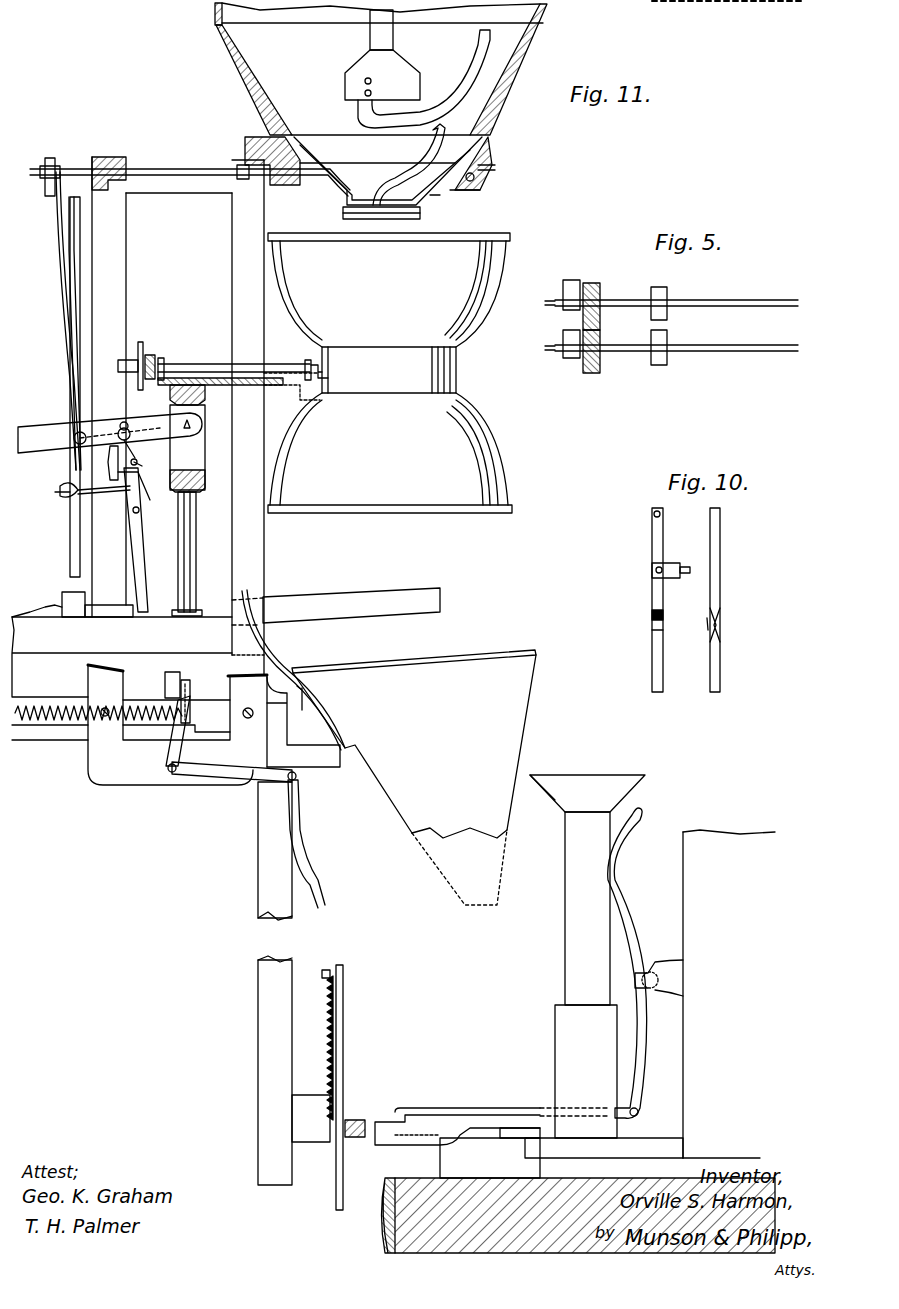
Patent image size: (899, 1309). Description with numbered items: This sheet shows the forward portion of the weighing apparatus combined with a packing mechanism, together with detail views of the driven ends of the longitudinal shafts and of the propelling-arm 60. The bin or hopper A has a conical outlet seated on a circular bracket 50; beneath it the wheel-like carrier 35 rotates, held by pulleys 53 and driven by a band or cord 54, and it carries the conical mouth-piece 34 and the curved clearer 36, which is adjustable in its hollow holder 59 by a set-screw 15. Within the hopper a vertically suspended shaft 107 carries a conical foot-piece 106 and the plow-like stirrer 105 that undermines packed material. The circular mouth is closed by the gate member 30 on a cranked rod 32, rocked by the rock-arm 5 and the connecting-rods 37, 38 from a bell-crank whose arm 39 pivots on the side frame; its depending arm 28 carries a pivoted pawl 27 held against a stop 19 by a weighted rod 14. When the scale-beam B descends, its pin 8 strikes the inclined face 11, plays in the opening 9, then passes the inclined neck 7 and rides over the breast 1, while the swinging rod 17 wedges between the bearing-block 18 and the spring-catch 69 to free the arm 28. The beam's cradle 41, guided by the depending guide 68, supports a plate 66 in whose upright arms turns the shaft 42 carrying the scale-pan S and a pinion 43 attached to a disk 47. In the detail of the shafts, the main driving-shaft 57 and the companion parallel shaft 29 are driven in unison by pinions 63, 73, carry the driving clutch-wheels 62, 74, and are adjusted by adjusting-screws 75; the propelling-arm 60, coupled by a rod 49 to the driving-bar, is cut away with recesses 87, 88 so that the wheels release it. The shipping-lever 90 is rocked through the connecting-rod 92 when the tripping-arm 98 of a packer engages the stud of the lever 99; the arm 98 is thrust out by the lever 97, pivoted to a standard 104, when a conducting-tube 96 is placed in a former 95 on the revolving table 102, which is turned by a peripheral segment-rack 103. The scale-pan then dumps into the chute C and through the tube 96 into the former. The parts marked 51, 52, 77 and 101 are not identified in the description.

In FIG. 11, the bin or hopper A is at (258, 88).
In FIG. 11, the shaft 107 is at (384, 30).
In FIG. 11, the conical foot-piece 106 is at (382, 75).
In FIG. 11, the stirrer 105 is at (424, 79).
In FIG. 11, the circular bracket 50 is at (258, 145).
In FIG. 11, the clearer 36 is at (433, 157).
In FIG. 11, the set-screw 15 is at (402, 165).
In FIG. 11, the hollow holder 59 is at (393, 187).
In FIG. 11, the pulleys 53 is at (505, 163).
In FIG. 11, the driving band or cord 54 is at (476, 180).
In FIG. 11, the wheel-like carrier 35 is at (468, 192).
In FIG. 11, the conical mouth-piece 34 is at (432, 198).
In FIG. 11, the gate member 30 is at (420, 217).
In FIG. 11, the rod 32 is at (190, 172).
In FIG. 11, the rock-arm 5 is at (48, 196).
In FIG. 11, the connecting-rod 37 is at (64, 285).
In FIG. 11, the connecting-rod 38 is at (82, 285).
In FIG. 11, the swinging rod 17 is at (68, 553).
In FIG. 11, the disk 47 is at (141, 340).
In FIG. 11, the pinion 43 is at (155, 356).
In FIG. 11, the shaft 42 is at (206, 362).
In FIG. 11, the plate 66 is at (216, 388).
In FIG. 11, the scale-beam B is at (110, 433).
In FIG. 11, the arm 39 is at (100, 430).
In FIG. 11, the pin 8 is at (130, 424).
In FIG. 11, the stop 19 is at (106, 468).
In FIG. 11, the inclined face 11 is at (137, 449).
In FIG. 11, the opening 9 is at (138, 456).
In FIG. 11, the inclined neck 7 is at (144, 462).
In FIG. 11, the pawl 27 is at (137, 485).
In FIG. 11, the weighted rod 14 is at (92, 495).
In FIG. 11, the breast 1 is at (138, 500).
In FIG. 11, the depending arm 28 is at (154, 562).
In FIG. 11, the cradle 41 is at (187, 448).
In FIG. 11, the depending guide 68 is at (199, 538).
In FIG. 11, the bearing-block 18 is at (48, 604).
In FIG. 11, the spring-catch 69 is at (109, 611).
In FIG. 11, the arm 101 is at (336, 669).
In FIG. 11, the adjusting-screws 75 is at (163, 680).
In FIG. 5, the adjusting-screws 75 is at (562, 338).
In FIG. 11, the link 77 is at (191, 686).
In FIG. 11, the shipping-lever 90 is at (210, 762).
In FIG. 11, the connecting-rod 92 is at (300, 807).
In FIG. 11, the chute C is at (414, 777).
In FIG. 11, the conducting-tube 96 is at (587, 890).
In FIG. 11, the lever 97 is at (642, 912).
In FIG. 11, the standard 104 is at (682, 972).
In FIG. 11, the former 95 is at (578, 1071).
In FIG. 11, the lever 99 is at (355, 1118).
In FIG. 11, the tripping-arm 98 is at (385, 1120).
In FIG. 11, the revolving table 102 is at (425, 1185).
In FIG. 11, the peripheral segment-rack 103 is at (383, 1215).
In FIG. 11, the bowl 51 is at (389, 290).
In FIG. 11, the scale-pan S is at (389, 370).
In FIG. 11, the bowl 52 is at (390, 453).
In FIG. 5, the companion parallel shaft 29 is at (671, 296).
In FIG. 5, the driving-shaft 57 is at (671, 358).
In FIG. 5, the pinion 73 is at (598, 283).
In FIG. 5, the pinion 63 is at (600, 370).
In FIG. 5, the driving clutch-wheel 74 is at (667, 290).
In FIG. 5, the driving clutch-wheel 62 is at (667, 363).
In FIG. 10, the propelling-arm 60 is at (663, 650).
In FIG. 10, the rod 49 is at (686, 560).
In FIG. 10, the recess 87 is at (695, 625).
In FIG. 10, the recess 88 is at (700, 625).